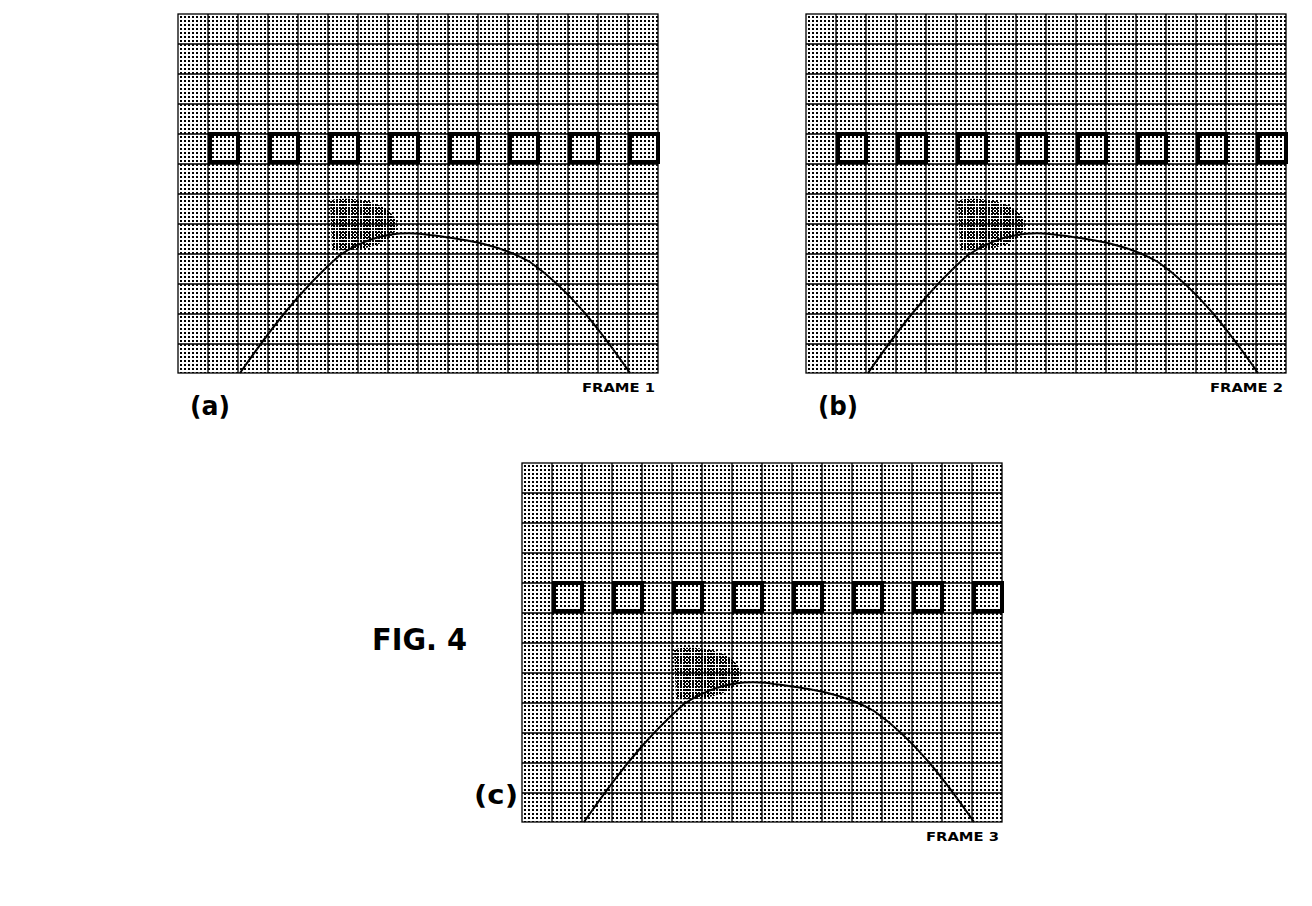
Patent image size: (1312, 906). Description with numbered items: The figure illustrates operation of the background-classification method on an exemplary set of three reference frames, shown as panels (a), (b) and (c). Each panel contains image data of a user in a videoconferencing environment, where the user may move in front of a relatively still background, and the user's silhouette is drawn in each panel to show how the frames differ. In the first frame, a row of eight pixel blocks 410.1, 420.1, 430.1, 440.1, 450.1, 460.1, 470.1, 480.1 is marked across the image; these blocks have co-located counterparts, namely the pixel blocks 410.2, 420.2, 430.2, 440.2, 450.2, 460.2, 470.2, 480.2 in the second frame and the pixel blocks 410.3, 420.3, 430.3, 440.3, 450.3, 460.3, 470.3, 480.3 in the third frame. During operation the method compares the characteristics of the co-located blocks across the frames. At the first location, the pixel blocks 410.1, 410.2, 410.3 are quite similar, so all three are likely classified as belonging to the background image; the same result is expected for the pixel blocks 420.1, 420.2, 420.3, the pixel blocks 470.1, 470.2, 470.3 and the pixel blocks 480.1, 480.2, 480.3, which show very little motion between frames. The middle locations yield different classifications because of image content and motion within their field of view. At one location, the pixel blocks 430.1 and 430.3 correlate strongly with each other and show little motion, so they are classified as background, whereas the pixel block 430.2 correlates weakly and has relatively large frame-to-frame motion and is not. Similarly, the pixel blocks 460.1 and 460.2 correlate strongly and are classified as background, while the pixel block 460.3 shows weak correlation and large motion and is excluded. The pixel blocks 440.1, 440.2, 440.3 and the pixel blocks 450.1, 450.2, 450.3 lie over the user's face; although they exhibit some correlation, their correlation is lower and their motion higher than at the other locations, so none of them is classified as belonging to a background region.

The pixel block 410.1 is at (222, 132).
The pixel block 420.1 is at (282, 132).
The pixel block 430.1 is at (342, 132).
The pixel block 440.1 is at (402, 132).
The pixel block 450.1 is at (462, 132).
The pixel block 460.1 is at (522, 132).
The pixel block 470.1 is at (582, 132).
The pixel block 480.1 is at (642, 132).
The pixel block 410.2 is at (864, 120).
The pixel block 420.2 is at (924, 120).
The pixel block 430.2 is at (984, 120).
The pixel block 440.2 is at (1044, 120).
The pixel block 450.2 is at (1104, 120).
The pixel block 460.2 is at (1164, 120).
The pixel block 470.2 is at (1224, 120).
The pixel block 480.2 is at (1284, 120).
The pixel block 410.3 is at (580, 569).
The pixel block 420.3 is at (640, 569).
The pixel block 430.3 is at (700, 569).
The pixel block 440.3 is at (760, 569).
The pixel block 450.3 is at (820, 569).
The pixel block 460.3 is at (880, 569).
The pixel block 470.3 is at (940, 569).
The pixel block 480.3 is at (1000, 569).